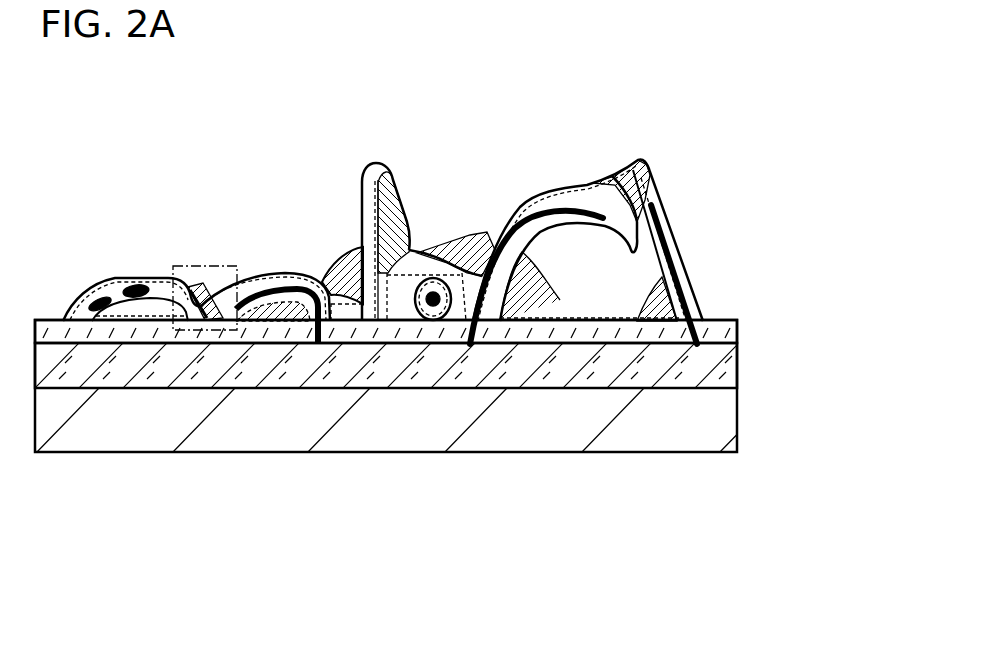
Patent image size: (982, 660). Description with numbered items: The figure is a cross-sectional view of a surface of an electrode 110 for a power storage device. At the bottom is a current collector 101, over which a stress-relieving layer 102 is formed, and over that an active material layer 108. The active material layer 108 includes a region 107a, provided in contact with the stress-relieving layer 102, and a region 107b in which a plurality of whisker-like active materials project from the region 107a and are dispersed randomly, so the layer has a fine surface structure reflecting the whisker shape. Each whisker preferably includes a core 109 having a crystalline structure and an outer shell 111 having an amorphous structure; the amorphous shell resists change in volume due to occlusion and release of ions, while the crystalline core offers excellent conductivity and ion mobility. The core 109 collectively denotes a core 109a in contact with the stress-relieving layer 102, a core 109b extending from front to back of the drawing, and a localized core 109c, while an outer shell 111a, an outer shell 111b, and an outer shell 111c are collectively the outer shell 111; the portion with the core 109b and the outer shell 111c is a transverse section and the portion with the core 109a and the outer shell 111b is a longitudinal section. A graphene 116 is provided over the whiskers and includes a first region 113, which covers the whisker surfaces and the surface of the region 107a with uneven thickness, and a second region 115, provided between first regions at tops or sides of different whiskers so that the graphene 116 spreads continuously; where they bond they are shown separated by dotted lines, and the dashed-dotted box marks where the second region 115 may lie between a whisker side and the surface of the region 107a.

The electrode 110 is at (84, 93).
The current collector 101 is at (100, 420).
The stress-relieving layer 102 is at (740, 344).
The region 107a is at (740, 320).
The region 107b is at (740, 157).
The active material layer 108 is at (810, 157).
The core 109 is at (405, 564).
The core 109a is at (267, 294).
The core 109b is at (433, 300).
The core 109c is at (136, 292).
The outer shell 111 is at (435, 130).
The outer shell 111a is at (158, 288).
The outer shell 111b is at (272, 282).
The outer shell 111c is at (430, 277).
The first region 113 is at (98, 284).
The second region 115 is at (213, 316).
The graphene 116 is at (640, 123).